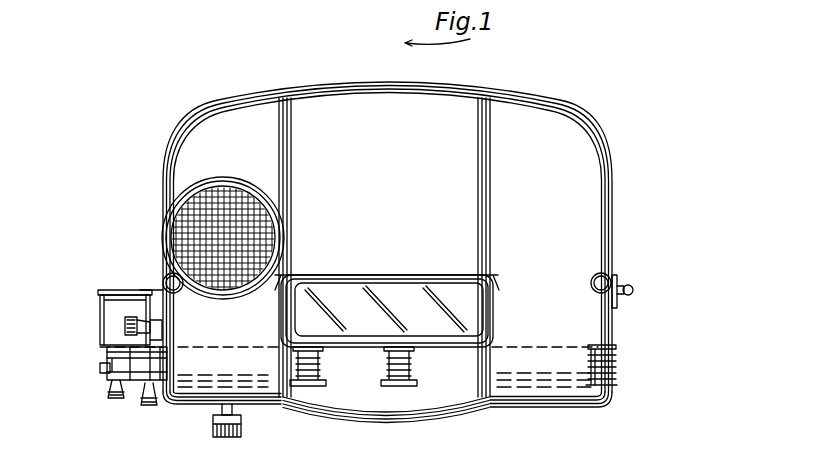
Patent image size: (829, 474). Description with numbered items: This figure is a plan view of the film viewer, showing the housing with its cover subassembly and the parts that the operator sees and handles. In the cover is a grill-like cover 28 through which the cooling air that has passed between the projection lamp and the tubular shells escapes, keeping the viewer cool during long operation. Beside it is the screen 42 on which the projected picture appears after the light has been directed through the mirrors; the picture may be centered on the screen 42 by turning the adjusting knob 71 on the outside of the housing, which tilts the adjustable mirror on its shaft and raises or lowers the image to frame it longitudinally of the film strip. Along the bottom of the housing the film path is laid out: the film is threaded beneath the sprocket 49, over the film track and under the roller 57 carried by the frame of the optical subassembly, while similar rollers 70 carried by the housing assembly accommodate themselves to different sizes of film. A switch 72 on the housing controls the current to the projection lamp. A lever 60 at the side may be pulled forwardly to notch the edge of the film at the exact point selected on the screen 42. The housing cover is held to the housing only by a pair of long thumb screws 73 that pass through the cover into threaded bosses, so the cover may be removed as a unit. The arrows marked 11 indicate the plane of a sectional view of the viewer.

The section line 11- 11 is at (379, 356).
The grill-like cover 28 is at (258, 243).
The screen 42 is at (400, 297).
The sprocket 49 is at (137, 388).
The roller 57 is at (307, 387).
The lever 60 is at (124, 326).
The rollers 70 is at (400, 387).
The adjusting knob 71 is at (215, 434).
The switch 72 is at (618, 285).
The thumb screws 73 is at (165, 276).